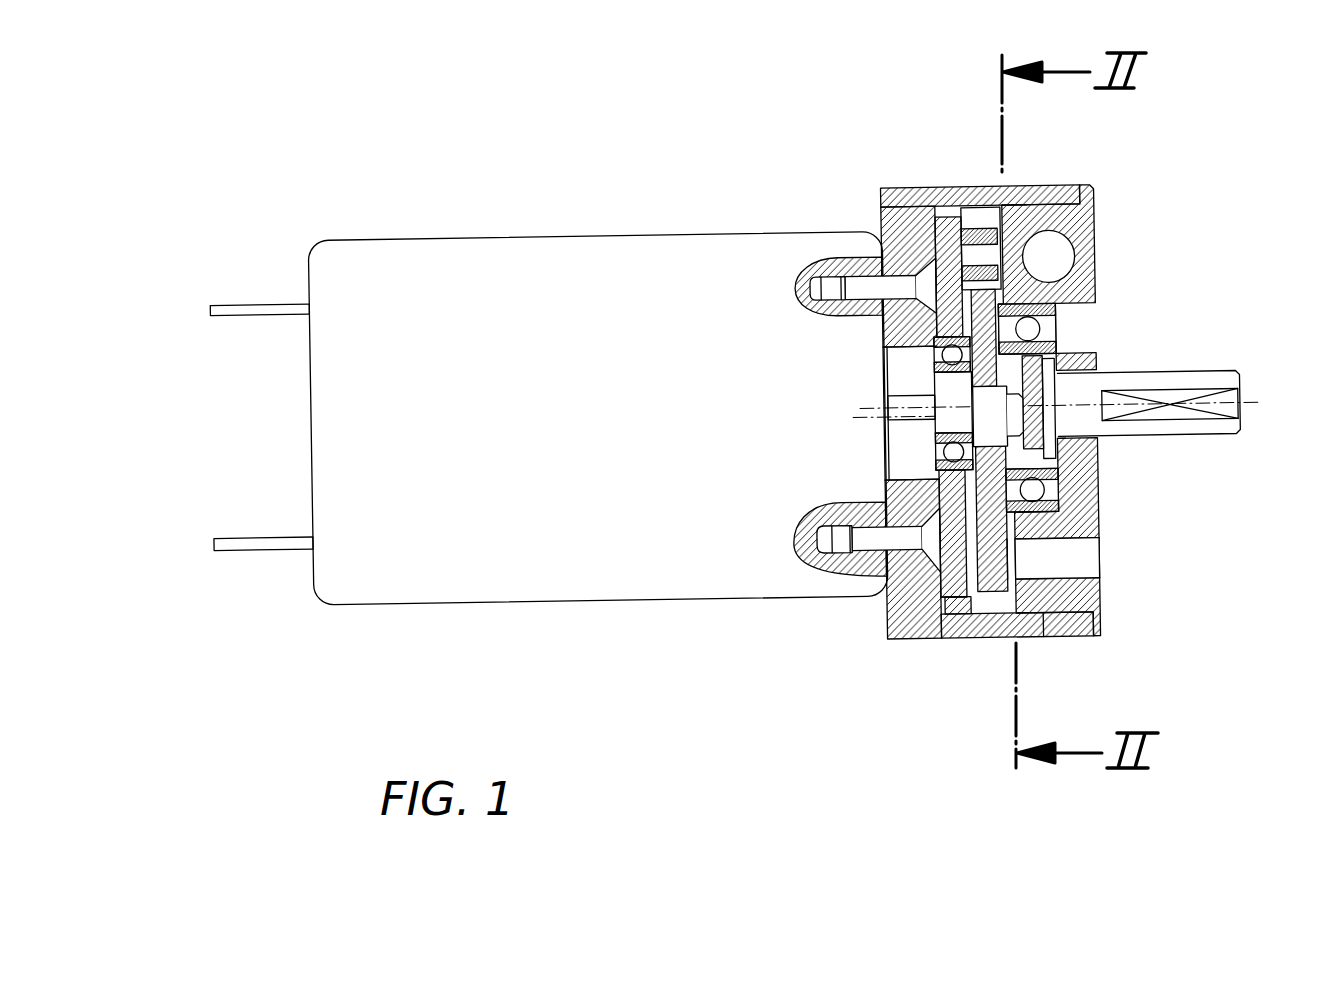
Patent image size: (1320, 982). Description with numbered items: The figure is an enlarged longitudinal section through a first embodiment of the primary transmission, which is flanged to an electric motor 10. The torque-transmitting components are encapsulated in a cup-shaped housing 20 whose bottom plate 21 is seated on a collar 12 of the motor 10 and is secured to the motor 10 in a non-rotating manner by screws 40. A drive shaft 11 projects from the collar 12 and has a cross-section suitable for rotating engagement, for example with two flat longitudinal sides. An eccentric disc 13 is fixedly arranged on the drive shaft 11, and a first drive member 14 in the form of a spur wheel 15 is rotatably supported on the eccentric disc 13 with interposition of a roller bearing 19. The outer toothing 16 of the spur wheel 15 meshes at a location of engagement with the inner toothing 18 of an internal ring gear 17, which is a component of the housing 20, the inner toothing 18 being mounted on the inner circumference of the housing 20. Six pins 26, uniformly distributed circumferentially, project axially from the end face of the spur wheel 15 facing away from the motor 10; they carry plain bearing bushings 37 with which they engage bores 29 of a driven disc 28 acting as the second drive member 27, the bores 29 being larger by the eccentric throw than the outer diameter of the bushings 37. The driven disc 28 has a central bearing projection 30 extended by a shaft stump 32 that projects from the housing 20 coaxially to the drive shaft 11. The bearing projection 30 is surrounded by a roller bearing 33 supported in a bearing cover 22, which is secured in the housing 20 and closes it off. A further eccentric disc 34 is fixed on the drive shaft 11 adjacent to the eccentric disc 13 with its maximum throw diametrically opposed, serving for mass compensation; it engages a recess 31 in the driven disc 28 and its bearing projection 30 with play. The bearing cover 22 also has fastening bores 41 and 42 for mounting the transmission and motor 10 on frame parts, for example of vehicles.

The electric motor 10 is at (481, 276).
The drive shaft 11 is at (1057, 400).
The collar 12 is at (905, 447).
The eccentric disc 13 is at (867, 393).
The first drive member 14 is at (1005, 600).
The spur wheel 15 is at (888, 608).
The outer toothing 16 is at (940, 597).
The internal ring gear 17 is at (945, 226).
The inner toothing 18 is at (984, 596).
The roller bearing 19 is at (893, 362).
The housing 20 is at (973, 190).
The bottom plate 21 is at (886, 222).
The bearing cover 22 is at (1083, 600).
The pins 26 is at (1005, 225).
The second drive member 27 is at (1012, 640).
The driven disc 28 is at (1070, 637).
The bores 29 is at (1055, 291).
The bearing projection 30 is at (1042, 328).
The recess 31 is at (1003, 362).
The shaft stump 32 is at (1222, 380).
The roller bearing 33 is at (1043, 492).
The eccentric disc 34 is at (1062, 444).
The plain bearing bushings 37 is at (1020, 205).
The screws 40 is at (867, 287).
The fastening bore 41 is at (1068, 243).
The fastening bore 42 is at (1072, 544).